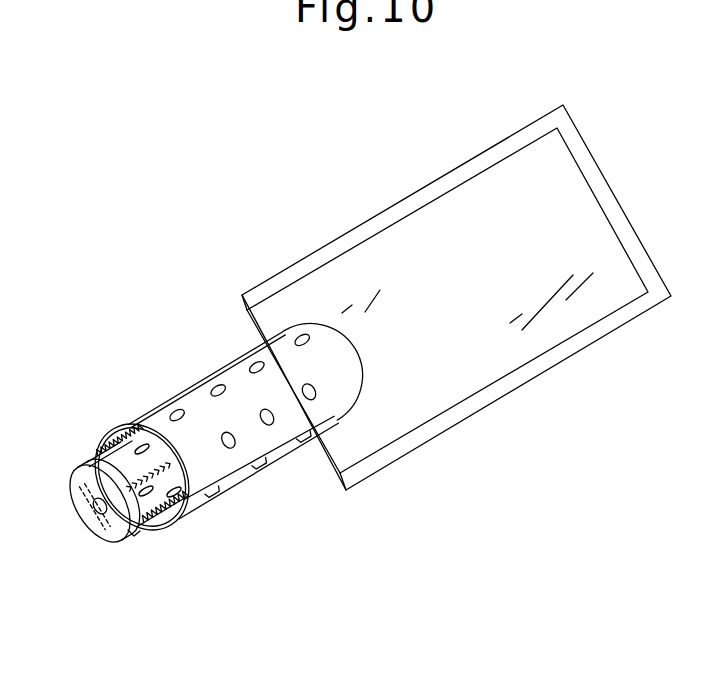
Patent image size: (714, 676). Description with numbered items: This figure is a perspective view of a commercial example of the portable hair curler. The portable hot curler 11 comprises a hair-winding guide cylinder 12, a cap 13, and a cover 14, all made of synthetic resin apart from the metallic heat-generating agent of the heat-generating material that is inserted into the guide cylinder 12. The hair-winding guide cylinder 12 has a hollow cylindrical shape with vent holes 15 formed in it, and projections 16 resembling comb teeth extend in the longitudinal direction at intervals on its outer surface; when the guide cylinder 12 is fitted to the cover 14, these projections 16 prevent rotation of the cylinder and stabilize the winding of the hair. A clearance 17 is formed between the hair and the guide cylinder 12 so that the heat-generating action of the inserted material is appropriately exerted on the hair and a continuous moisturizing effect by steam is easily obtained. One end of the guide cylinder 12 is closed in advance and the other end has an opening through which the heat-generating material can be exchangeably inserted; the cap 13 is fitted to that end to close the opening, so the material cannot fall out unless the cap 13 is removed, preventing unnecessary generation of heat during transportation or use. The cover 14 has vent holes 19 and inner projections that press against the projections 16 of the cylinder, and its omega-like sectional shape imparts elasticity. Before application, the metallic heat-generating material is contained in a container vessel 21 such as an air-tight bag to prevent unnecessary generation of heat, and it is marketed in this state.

The portable hot curler 11 is at (196, 316).
The hair-winding guide cylinder 12 is at (117, 461).
The cap 13 is at (78, 503).
The cover 14 is at (267, 446).
The vent holes 15 is at (137, 527).
The projections 16 is at (138, 530).
The clearance 17 is at (172, 527).
The vent holes 19 is at (227, 450).
The container vessel 21 is at (570, 328).